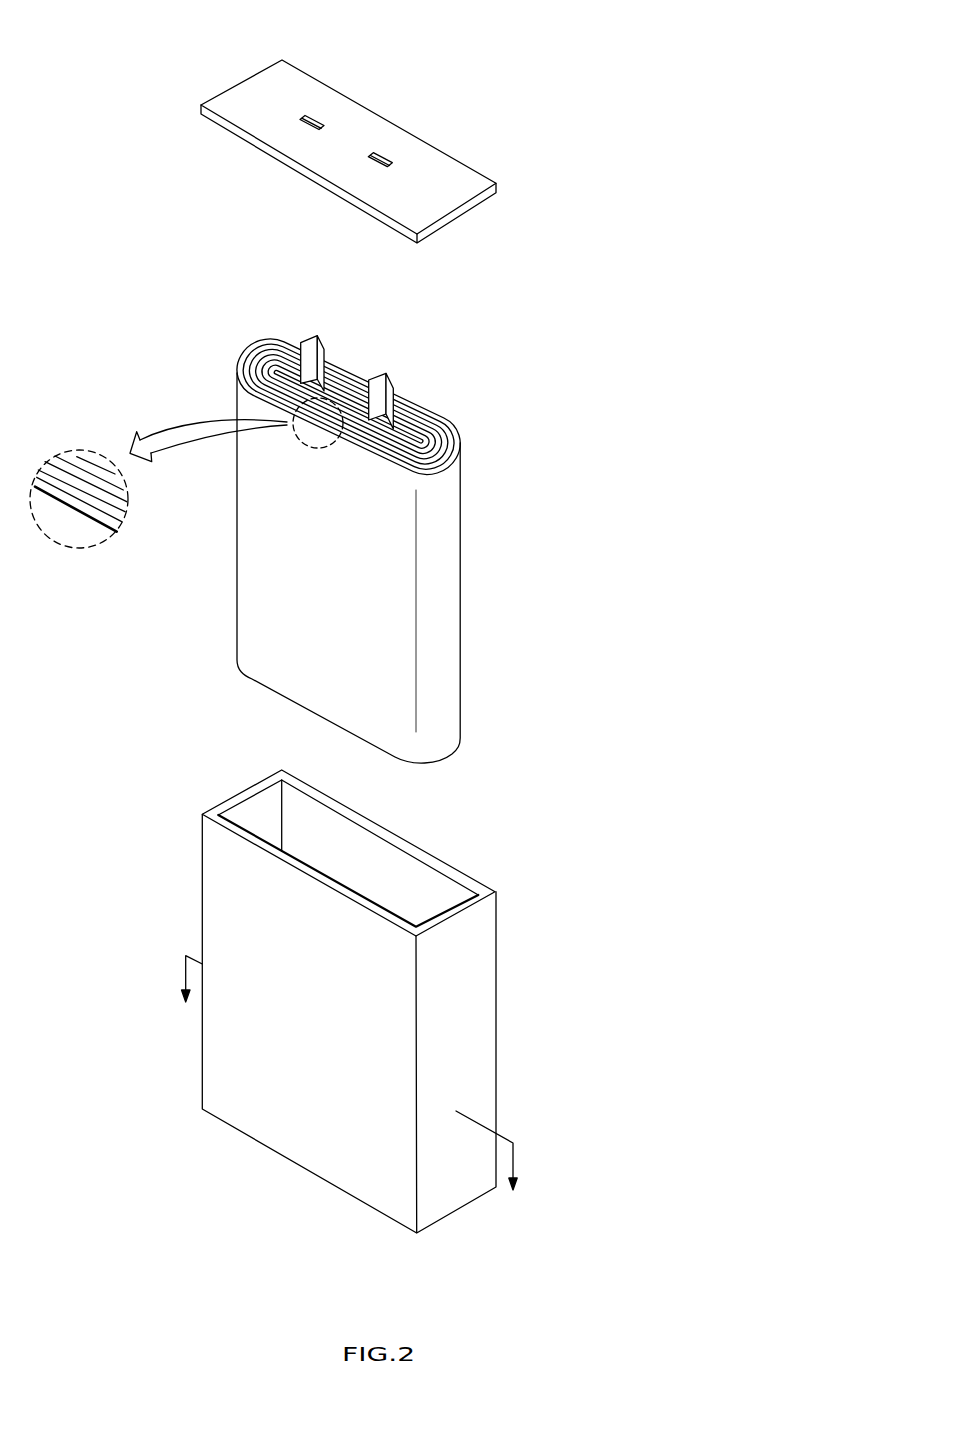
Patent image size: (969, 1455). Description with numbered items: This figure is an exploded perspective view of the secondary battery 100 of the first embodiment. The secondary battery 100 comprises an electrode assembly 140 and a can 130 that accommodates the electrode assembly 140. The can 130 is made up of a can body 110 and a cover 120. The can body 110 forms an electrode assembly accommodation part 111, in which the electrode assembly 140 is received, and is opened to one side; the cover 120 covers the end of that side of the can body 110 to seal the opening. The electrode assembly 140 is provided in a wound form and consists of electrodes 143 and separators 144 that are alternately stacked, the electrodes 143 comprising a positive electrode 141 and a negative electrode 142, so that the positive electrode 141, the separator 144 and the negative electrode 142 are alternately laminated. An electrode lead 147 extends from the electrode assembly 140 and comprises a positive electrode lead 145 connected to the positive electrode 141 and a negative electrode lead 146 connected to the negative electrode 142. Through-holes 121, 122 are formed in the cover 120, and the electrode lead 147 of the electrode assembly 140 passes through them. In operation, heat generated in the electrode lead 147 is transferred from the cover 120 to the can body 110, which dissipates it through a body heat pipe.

The secondary battery 100 is at (514, 34).
The can body 110 is at (381, 1001).
The electrode assembly accommodation part 111 is at (433, 895).
The cover 120 is at (393, 149).
The through-hole 121 is at (381, 156).
The through-hole 122 is at (311, 117).
The can 130 is at (678, 692).
The electrode assembly 140 is at (296, 511).
The positive electrode 141 is at (125, 492).
The negative electrode 142 is at (122, 516).
The electrode 143 is at (158, 478).
The separator 144 is at (77, 457).
The positive electrode lead 145 is at (383, 378).
The negative electrode lead 146 is at (307, 339).
The electrode lead 147 is at (362, 344).